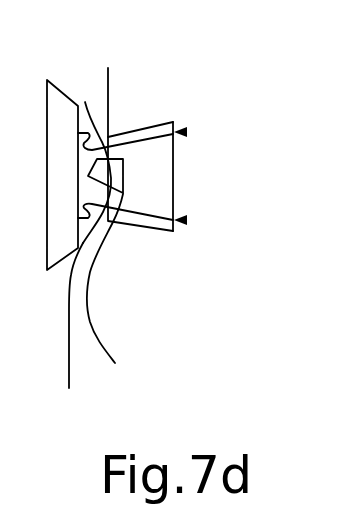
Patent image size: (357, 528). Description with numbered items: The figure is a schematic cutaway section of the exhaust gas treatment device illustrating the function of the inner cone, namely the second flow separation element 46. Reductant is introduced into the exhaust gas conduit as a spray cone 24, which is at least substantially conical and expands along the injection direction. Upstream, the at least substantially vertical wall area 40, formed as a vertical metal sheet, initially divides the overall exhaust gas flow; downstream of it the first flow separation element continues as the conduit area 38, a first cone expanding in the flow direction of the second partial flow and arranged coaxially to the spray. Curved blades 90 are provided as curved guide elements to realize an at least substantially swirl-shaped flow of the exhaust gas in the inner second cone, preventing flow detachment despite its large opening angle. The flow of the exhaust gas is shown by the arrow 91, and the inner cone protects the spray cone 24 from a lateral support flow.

The spray cone 24 is at (85, 102).
The conduit area 38 is at (166, 248).
The wall area 40 is at (108, 85).
The second flow separation element 46 is at (95, 186).
The curved blades 90 is at (186, 133).
The arrow 91 is at (70, 375).